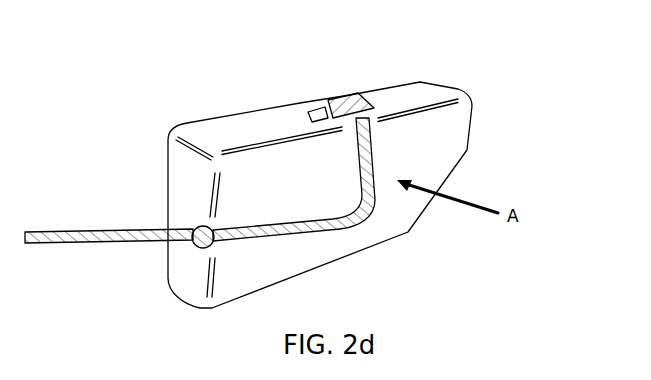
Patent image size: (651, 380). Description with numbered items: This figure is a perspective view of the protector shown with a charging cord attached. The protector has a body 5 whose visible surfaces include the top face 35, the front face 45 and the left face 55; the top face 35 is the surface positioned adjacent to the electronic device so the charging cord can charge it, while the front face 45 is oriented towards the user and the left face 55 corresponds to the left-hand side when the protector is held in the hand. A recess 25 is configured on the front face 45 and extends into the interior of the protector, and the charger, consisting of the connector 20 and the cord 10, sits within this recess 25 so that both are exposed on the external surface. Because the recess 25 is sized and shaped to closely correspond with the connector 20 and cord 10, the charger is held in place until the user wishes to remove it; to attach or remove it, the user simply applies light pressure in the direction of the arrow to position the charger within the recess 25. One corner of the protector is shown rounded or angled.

The body 5 is at (446, 129).
The cord 10 is at (128, 246).
The connector 20 is at (338, 92).
The recess 25 is at (367, 207).
The top face 35 is at (380, 92).
The front face 45 is at (291, 200).
The left face 55 is at (172, 162).